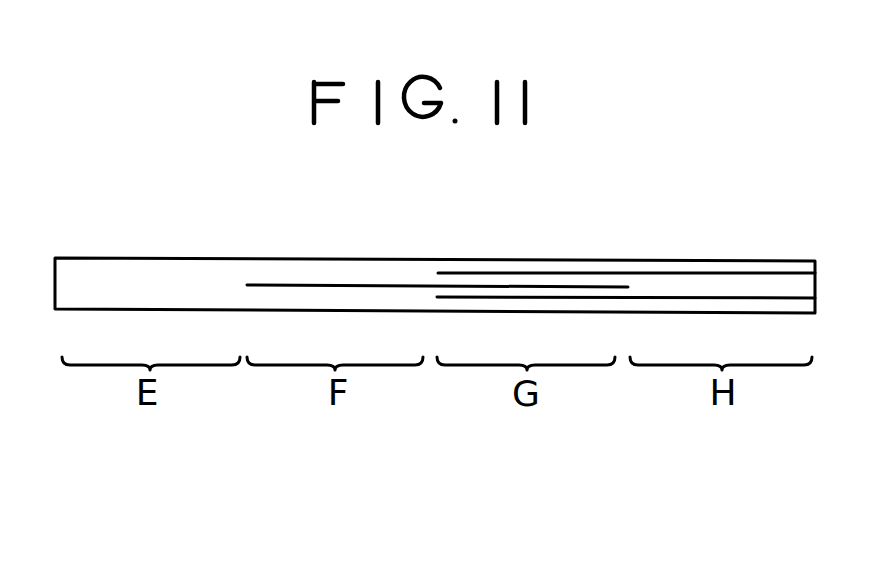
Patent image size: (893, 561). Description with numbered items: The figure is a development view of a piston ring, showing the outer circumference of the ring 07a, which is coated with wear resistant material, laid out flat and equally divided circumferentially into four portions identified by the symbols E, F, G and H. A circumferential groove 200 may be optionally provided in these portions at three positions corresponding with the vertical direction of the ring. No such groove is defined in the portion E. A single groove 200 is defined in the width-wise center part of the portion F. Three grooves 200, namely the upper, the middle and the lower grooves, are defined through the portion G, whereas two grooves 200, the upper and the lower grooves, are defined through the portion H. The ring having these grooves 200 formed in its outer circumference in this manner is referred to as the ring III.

The ring III is at (119, 221).
The ring 07a is at (235, 280).
The circumferential groove 200 is at (395, 287).